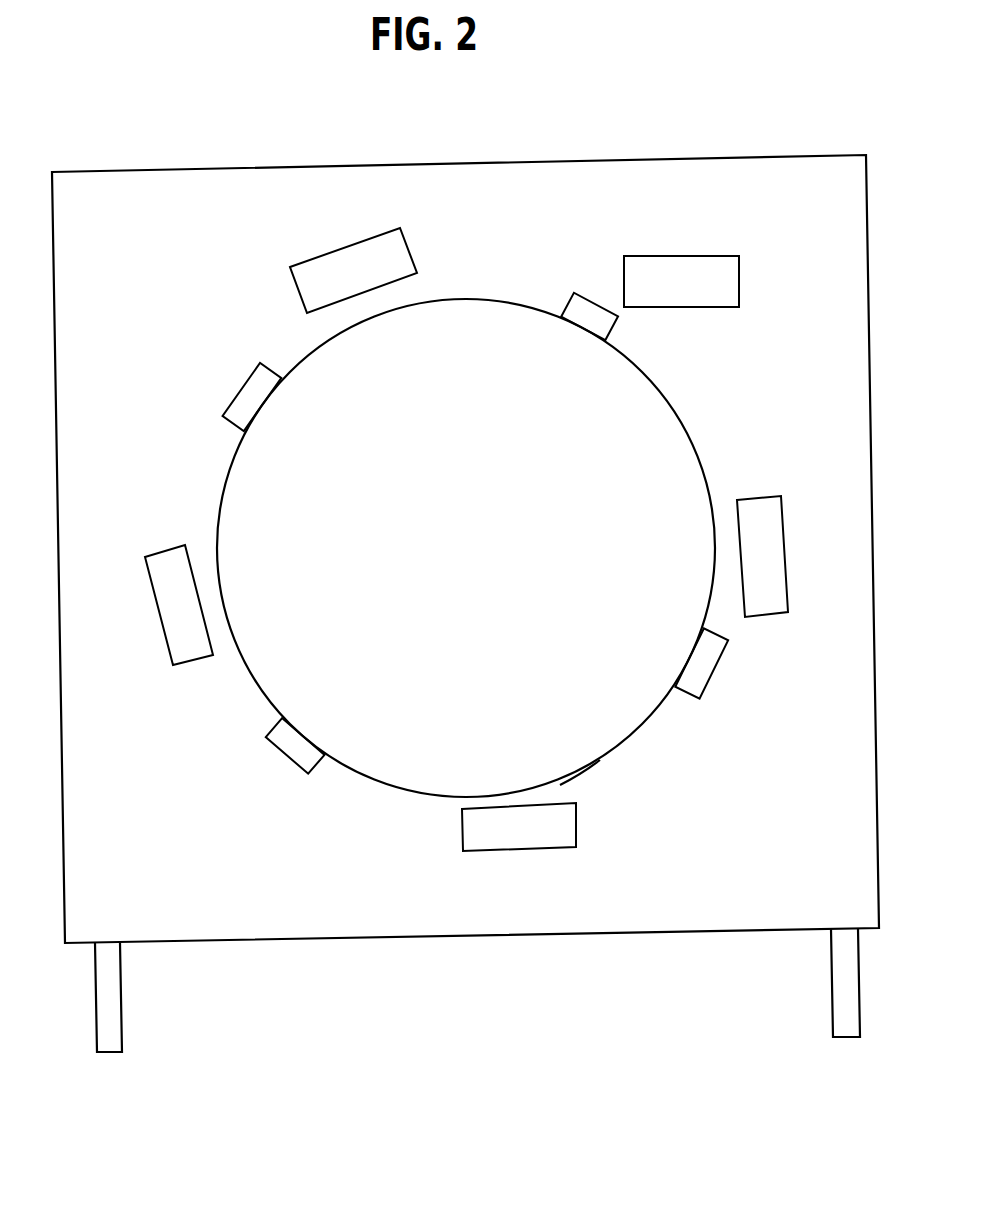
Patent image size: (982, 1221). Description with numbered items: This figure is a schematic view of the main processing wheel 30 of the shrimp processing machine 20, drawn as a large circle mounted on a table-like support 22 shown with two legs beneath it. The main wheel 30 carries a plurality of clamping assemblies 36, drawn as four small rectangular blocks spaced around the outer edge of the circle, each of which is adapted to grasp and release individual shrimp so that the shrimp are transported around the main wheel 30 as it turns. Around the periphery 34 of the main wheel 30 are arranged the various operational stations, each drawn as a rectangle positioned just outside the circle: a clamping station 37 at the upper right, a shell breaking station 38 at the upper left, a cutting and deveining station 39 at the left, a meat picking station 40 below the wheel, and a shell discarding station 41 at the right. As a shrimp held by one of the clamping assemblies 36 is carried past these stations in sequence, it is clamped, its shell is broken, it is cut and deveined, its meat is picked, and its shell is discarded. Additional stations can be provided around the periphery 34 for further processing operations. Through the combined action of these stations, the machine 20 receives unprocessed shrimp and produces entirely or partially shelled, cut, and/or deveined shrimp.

The machine 20 is at (552, 118).
The table 22 is at (696, 157).
The main processing wheel 30 is at (667, 438).
The periphery 34 is at (631, 730).
The clamping assemblies 36 is at (238, 400).
The clamping station 37 is at (708, 263).
The shell breaking station 38 is at (320, 270).
The cutting and deveining station 39 is at (187, 647).
The meat picking station 40 is at (536, 838).
The shell discarding station 41 is at (771, 540).